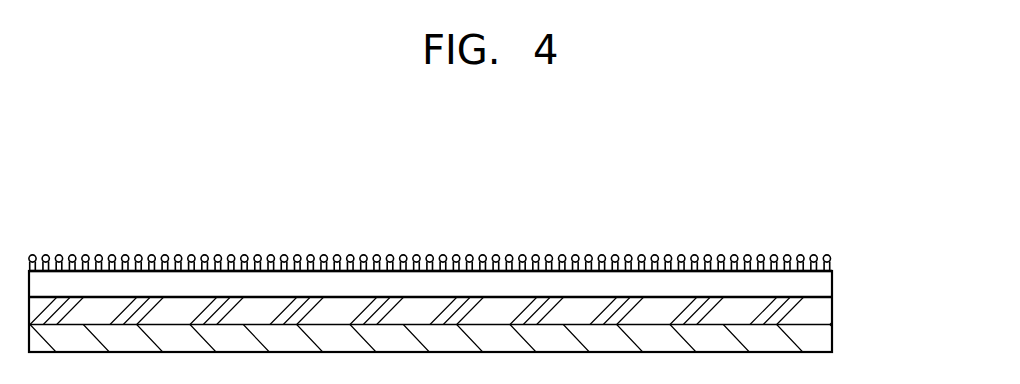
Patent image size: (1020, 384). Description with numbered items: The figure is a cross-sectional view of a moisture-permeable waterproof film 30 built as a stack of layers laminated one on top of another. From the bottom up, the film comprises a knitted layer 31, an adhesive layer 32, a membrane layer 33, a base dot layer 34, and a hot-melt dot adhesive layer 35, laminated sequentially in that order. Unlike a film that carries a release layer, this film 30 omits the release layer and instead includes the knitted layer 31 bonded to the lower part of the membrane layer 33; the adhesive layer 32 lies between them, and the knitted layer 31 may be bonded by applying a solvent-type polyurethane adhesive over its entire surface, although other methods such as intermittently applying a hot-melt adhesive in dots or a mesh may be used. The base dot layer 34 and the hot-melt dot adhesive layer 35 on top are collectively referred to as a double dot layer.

The moisture-permeable waterproof film 30 is at (782, 222).
The knitted layer 31 is at (827, 338).
The adhesive layer 32 is at (827, 312).
The membrane layer 33 is at (827, 287).
The base dot layer 34 is at (832, 267).
The hot-melt dot adhesive layer 35 is at (831, 257).